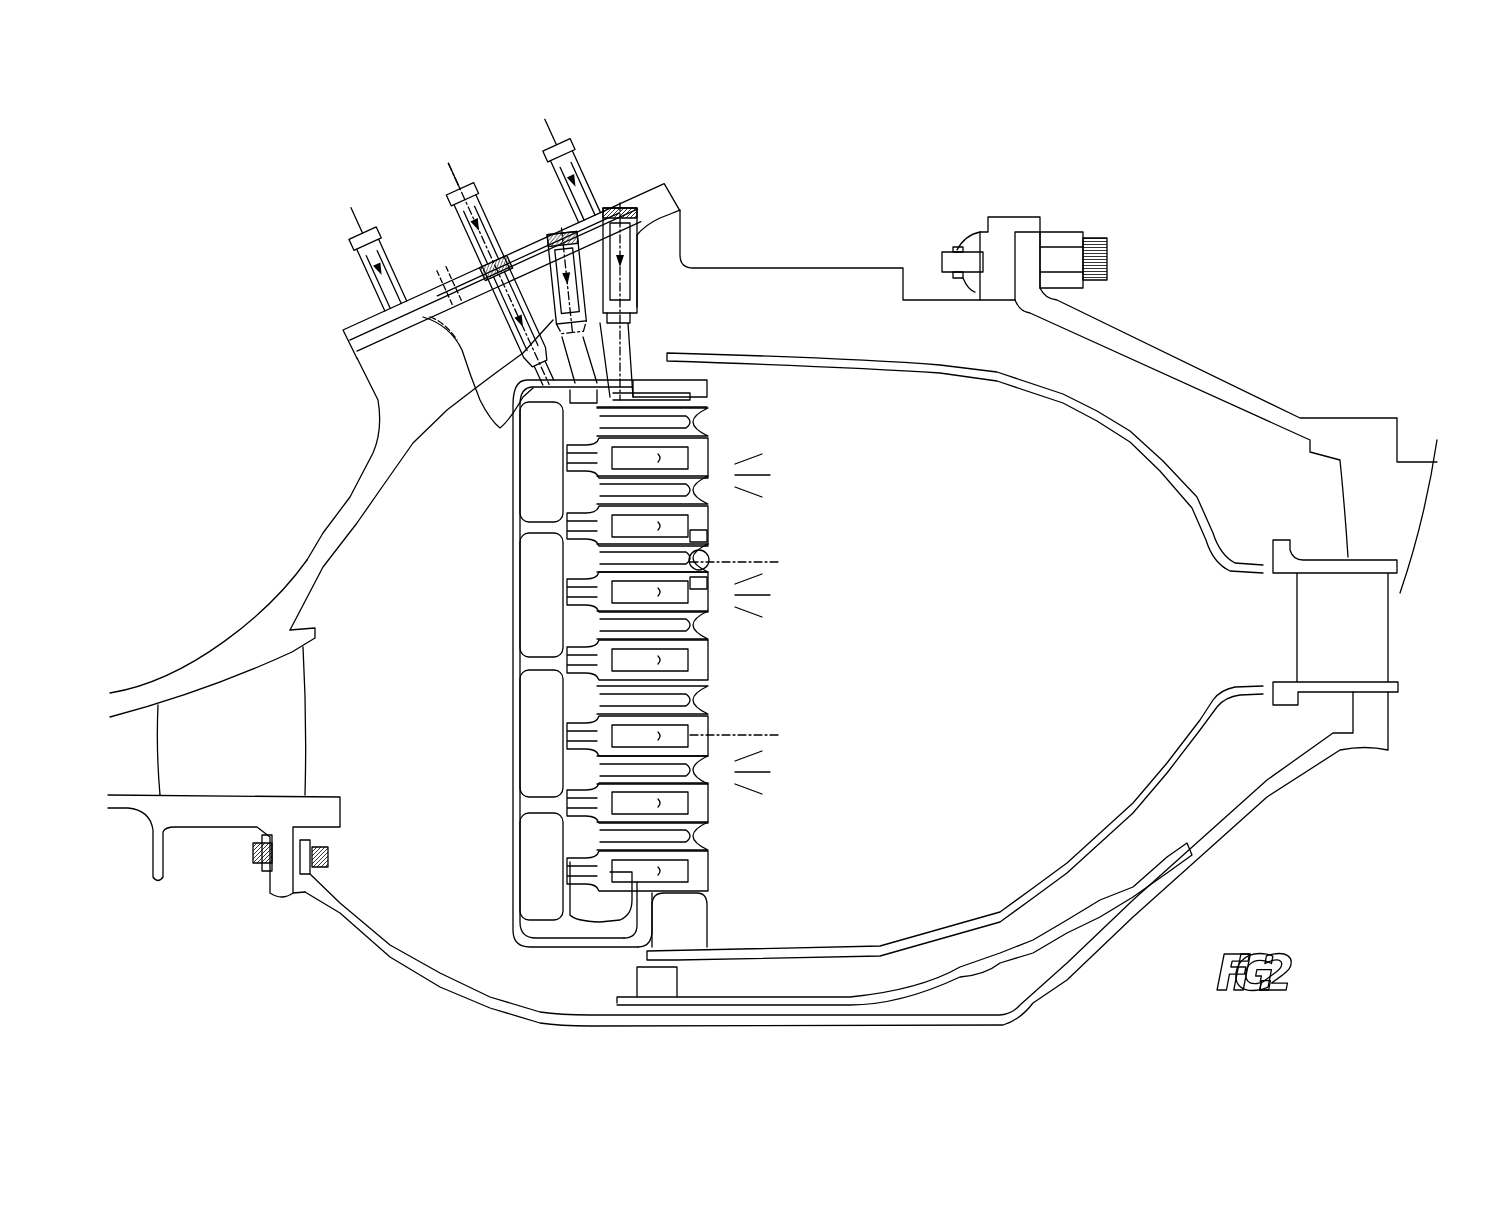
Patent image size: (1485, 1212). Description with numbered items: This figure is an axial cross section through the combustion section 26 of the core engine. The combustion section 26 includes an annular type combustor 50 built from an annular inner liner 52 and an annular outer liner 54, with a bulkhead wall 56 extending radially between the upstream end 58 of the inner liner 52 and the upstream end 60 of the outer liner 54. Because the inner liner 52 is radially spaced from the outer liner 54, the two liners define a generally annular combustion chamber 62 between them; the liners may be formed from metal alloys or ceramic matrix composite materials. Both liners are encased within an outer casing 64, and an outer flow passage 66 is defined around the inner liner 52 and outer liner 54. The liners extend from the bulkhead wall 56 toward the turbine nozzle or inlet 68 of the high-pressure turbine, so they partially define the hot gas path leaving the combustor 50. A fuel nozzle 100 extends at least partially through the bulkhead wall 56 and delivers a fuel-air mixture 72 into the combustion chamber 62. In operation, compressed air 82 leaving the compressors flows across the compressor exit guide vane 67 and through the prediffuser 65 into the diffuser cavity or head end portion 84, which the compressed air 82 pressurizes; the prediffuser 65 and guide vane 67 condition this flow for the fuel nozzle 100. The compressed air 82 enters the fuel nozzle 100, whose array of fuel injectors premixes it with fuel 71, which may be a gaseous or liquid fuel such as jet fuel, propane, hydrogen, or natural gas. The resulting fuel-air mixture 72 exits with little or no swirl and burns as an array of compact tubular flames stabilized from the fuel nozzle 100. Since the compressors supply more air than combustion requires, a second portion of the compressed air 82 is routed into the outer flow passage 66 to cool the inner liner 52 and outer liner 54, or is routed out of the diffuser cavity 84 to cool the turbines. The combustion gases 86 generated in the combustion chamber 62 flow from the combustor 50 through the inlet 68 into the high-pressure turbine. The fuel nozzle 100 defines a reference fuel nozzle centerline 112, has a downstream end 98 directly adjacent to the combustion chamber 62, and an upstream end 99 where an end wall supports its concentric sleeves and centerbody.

The combustion section 26 is at (803, 172).
The annular type combustor 50 is at (1078, 365).
The annular inner liner 52 is at (843, 938).
The annular outer liner 54 is at (948, 378).
The bulkhead wall 56 is at (680, 947).
The upstream end of the inner liner 58 is at (712, 947).
The upstream end of the outer liner 60 is at (735, 368).
The combustion chamber 62 is at (827, 659).
The outer casing 64 is at (810, 270).
The prediffuser 65 is at (190, 715).
The outer flow passage 66 is at (849, 336).
The compressor exit guide vane 67 is at (236, 744).
The turbine nozzle or inlet 68 is at (1357, 639).
The fuel 71 is at (366, 240).
The fuel-air mixture 72 is at (758, 495).
The compressed air 82 is at (433, 710).
The diffuser cavity or head end portion 84 is at (412, 594).
The combustion gases 86 is at (1212, 628).
The downstream end of the fuel nozzle 98 is at (1459, 629).
The upstream end of the fuel nozzle 99 is at (131, 612).
The fuel nozzle 100 is at (775, 521).
The fuel nozzle centerline 112 is at (758, 562).